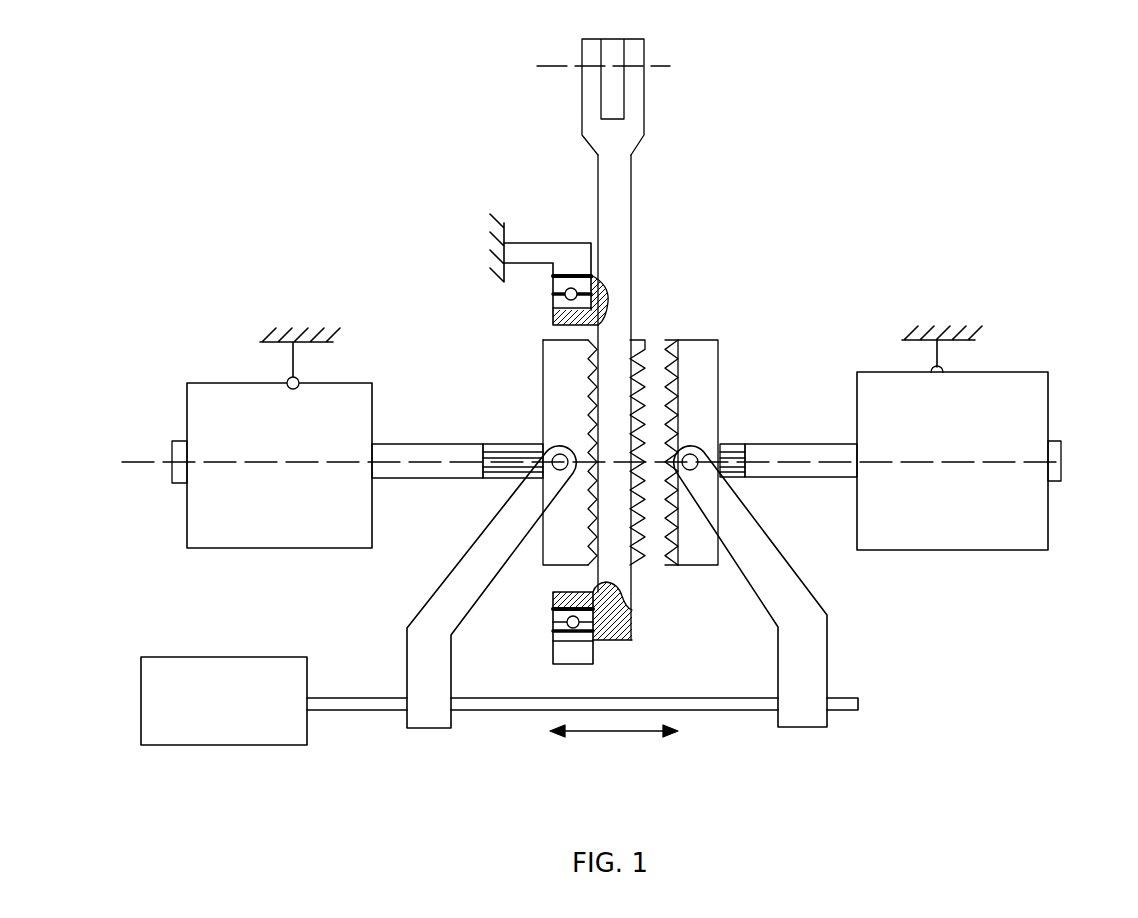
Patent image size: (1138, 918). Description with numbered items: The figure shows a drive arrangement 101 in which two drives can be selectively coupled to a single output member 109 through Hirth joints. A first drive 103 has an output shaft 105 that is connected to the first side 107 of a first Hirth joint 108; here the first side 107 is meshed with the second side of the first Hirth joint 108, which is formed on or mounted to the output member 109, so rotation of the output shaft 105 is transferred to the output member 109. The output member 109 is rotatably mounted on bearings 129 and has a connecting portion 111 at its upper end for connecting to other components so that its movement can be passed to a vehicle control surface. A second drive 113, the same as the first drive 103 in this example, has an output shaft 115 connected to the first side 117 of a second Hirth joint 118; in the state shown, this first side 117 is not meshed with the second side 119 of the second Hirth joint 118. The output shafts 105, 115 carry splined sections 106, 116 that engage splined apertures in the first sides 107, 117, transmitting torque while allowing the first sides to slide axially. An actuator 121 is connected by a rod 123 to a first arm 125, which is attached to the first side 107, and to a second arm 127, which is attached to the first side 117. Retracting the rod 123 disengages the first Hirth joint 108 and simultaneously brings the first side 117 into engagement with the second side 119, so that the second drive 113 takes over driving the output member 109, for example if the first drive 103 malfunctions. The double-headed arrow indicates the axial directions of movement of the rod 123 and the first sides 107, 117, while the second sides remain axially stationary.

The drive arrangement 101 is at (783, 117).
The first drive 103 is at (187, 383).
The output shaft 105 is at (460, 444).
The splined section 106 is at (520, 444).
The first side of first Hirth joint 107 is at (543, 341).
The first Hirth joint 108 is at (566, 579).
The output member 109 is at (631, 262).
The connecting portion 111 is at (645, 50).
The second drive 113 is at (1048, 372).
The output shaft 115 is at (781, 444).
The splined section 116 is at (727, 444).
The first side of second Hirth joint 117 is at (716, 340).
The second Hirth joint 118 is at (676, 594).
The second side of second Hirth joint 119 is at (636, 338).
The actuator 121 is at (207, 745).
The rod 123 is at (333, 710).
The first arm 125 is at (452, 729).
The second arm 127 is at (820, 727).
The bearings 129 is at (553, 290).